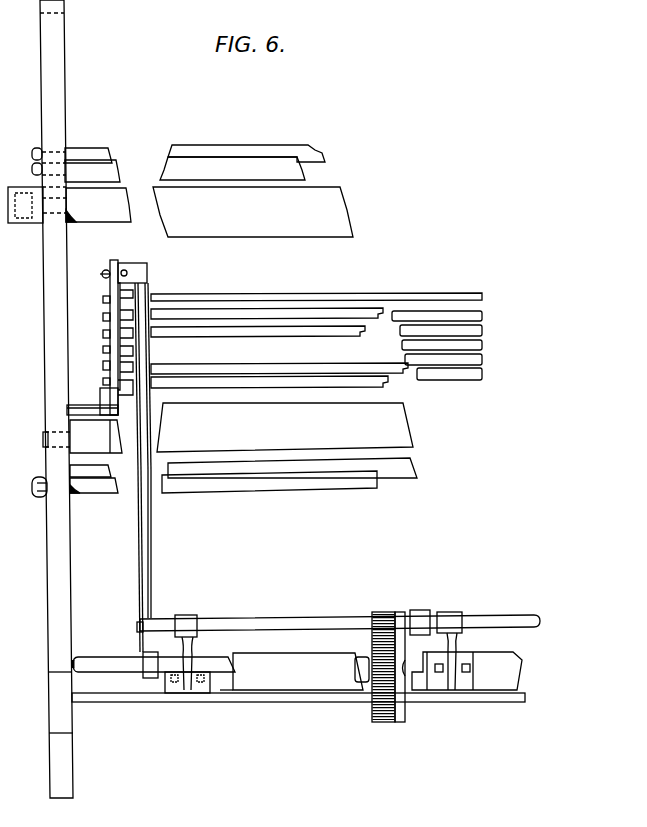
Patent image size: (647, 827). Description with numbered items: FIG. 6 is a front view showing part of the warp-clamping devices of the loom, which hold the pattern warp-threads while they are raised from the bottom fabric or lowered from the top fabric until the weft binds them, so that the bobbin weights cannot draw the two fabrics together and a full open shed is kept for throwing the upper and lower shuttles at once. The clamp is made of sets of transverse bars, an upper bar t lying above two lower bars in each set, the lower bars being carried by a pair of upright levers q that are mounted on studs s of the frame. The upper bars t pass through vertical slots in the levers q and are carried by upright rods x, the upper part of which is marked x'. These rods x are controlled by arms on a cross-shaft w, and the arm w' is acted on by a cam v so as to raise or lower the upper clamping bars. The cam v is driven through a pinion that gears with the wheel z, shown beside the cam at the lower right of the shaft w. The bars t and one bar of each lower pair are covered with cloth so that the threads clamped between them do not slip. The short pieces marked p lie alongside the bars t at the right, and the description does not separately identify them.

The upper bar t is at (316, 340).
The rods p is at (338, 332).
The rack bar x' is at (152, 376).
The upright rod x is at (131, 561).
The upright lever q is at (152, 400).
The cross-shaft w is at (340, 614).
The arm w' is at (420, 614).
The stud s is at (222, 652).
The cam v is at (428, 707).
The wheel z is at (381, 679).